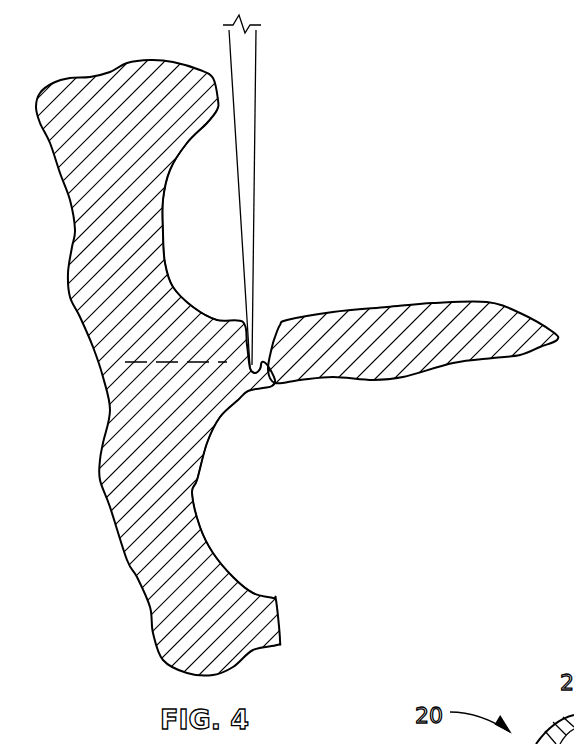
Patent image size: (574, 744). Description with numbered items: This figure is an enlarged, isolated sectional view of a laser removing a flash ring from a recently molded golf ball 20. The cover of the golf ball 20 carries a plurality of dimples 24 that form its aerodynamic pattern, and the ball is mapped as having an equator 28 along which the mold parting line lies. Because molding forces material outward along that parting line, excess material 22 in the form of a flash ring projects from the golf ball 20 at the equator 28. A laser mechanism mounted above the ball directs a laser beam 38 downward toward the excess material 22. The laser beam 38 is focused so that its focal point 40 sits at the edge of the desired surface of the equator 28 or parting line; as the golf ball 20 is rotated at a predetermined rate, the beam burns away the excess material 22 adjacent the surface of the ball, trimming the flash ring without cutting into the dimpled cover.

The golf ball 20 is at (133, 575).
The excess material 22 is at (490, 348).
The dimples 24 is at (187, 213).
The equator 28 is at (220, 360).
The laser beam 38 is at (253, 89).
The focal point 40 is at (252, 369).